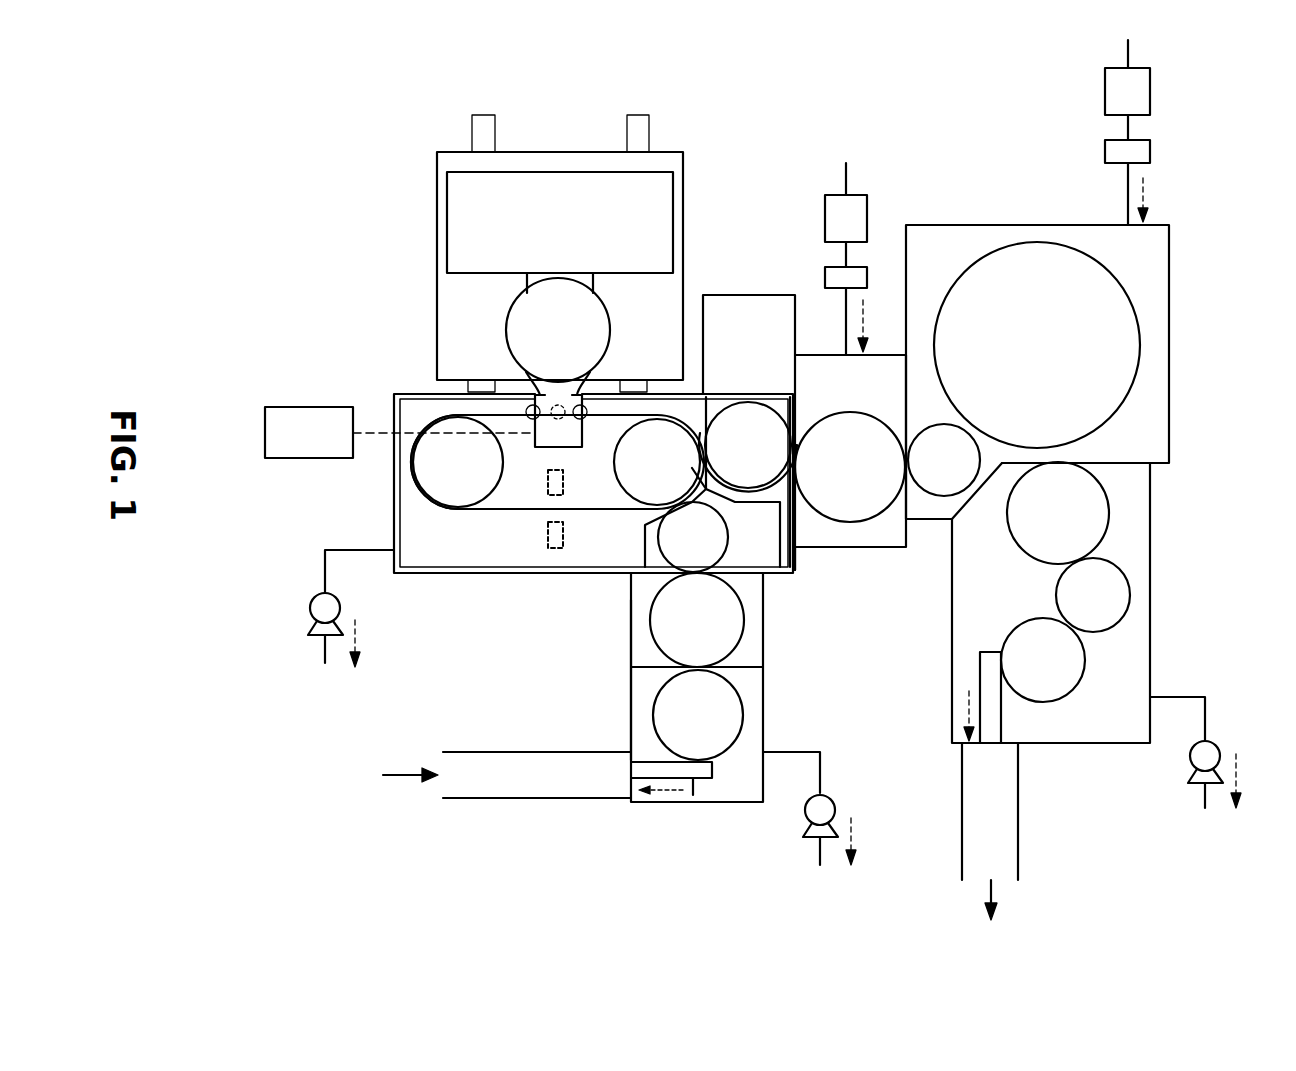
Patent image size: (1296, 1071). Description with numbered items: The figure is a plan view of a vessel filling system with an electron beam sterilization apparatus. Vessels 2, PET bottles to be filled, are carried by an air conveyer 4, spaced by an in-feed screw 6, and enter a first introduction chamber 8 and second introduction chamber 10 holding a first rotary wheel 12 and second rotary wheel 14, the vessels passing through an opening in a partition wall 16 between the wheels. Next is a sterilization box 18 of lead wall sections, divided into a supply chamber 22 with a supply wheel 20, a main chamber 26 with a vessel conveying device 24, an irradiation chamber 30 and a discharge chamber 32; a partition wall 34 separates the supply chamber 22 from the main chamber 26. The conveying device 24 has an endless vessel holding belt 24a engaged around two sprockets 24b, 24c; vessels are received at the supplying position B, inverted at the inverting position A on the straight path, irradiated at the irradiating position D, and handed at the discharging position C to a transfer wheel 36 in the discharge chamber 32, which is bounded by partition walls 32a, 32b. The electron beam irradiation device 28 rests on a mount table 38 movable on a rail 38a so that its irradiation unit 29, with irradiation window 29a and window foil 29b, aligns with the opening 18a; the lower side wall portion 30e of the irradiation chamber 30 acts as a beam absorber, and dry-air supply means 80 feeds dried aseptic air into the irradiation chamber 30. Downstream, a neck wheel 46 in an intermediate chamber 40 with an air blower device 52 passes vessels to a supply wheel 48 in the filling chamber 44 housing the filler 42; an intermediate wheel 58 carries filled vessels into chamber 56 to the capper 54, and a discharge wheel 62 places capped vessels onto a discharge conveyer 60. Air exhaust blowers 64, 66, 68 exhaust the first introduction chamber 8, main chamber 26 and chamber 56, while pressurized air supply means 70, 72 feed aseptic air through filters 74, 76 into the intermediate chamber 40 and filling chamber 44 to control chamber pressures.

The vessel 2 is at (555, 548).
The air conveyer 4 is at (530, 785).
The in-feed screw 6 is at (697, 780).
The first introduction chamber 8 is at (631, 700).
The second introduction chamber 10 is at (631, 648).
The first rotary wheel 12 is at (745, 713).
The second rotary wheel 14 is at (742, 640).
The partition wall 16 is at (745, 668).
The sterilization box 18 is at (456, 580).
The opening 18a is at (536, 430).
The supply wheel 20 is at (655, 572).
The supply chamber 22 is at (780, 570).
The vessel conveying device 24 is at (503, 518).
The vessel holding belt 24a is at (487, 511).
The sprocket 24b is at (413, 473).
The sprocket 24c is at (700, 447).
The main chamber 26 is at (410, 517).
The electron beam irradiation device 28 is at (470, 221).
The irradiation unit 29 is at (588, 330).
The irradiation window 29a is at (543, 388).
The window foil 29b is at (575, 388).
The irradiation chamber 30 is at (610, 505).
The lower side wall portion 30e is at (560, 440).
The discharge chamber 32 is at (852, 547).
The partition wall 32a is at (714, 517).
The partition wall 32b is at (706, 438).
The partition wall 34 is at (647, 543).
The transfer wheel 36 is at (770, 395).
The mount table 38 is at (684, 242).
The rail 38a is at (497, 135).
The intermediate chamber 40 is at (816, 355).
The filler 42 is at (1150, 383).
The filling chamber 44 is at (1171, 318).
The neck wheel 46 is at (884, 413).
The supply wheel 48 is at (926, 495).
The air blower device 52 is at (866, 388).
The capper 54 is at (1130, 592).
The chamber 56 is at (1152, 497).
The intermediate wheel 58 is at (1108, 520).
The discharge conveyer 60 is at (1018, 830).
The discharge wheel 62 is at (1080, 688).
The air exhaust blower 64 is at (838, 806).
The air exhaust blower 66 is at (310, 607).
The air exhaust blower 68 is at (1190, 772).
The pressurized air supply means 70 is at (867, 220).
The pressurized air supply means 72 is at (1105, 100).
The filter 74 is at (825, 278).
The filter 76 is at (1105, 152).
The dry-air supply means 80 is at (312, 407).
The inverting position A is at (545, 518).
The vessel supplying position B is at (690, 502).
The vessel discharging position C is at (715, 430).
The irradiating position D is at (568, 436).